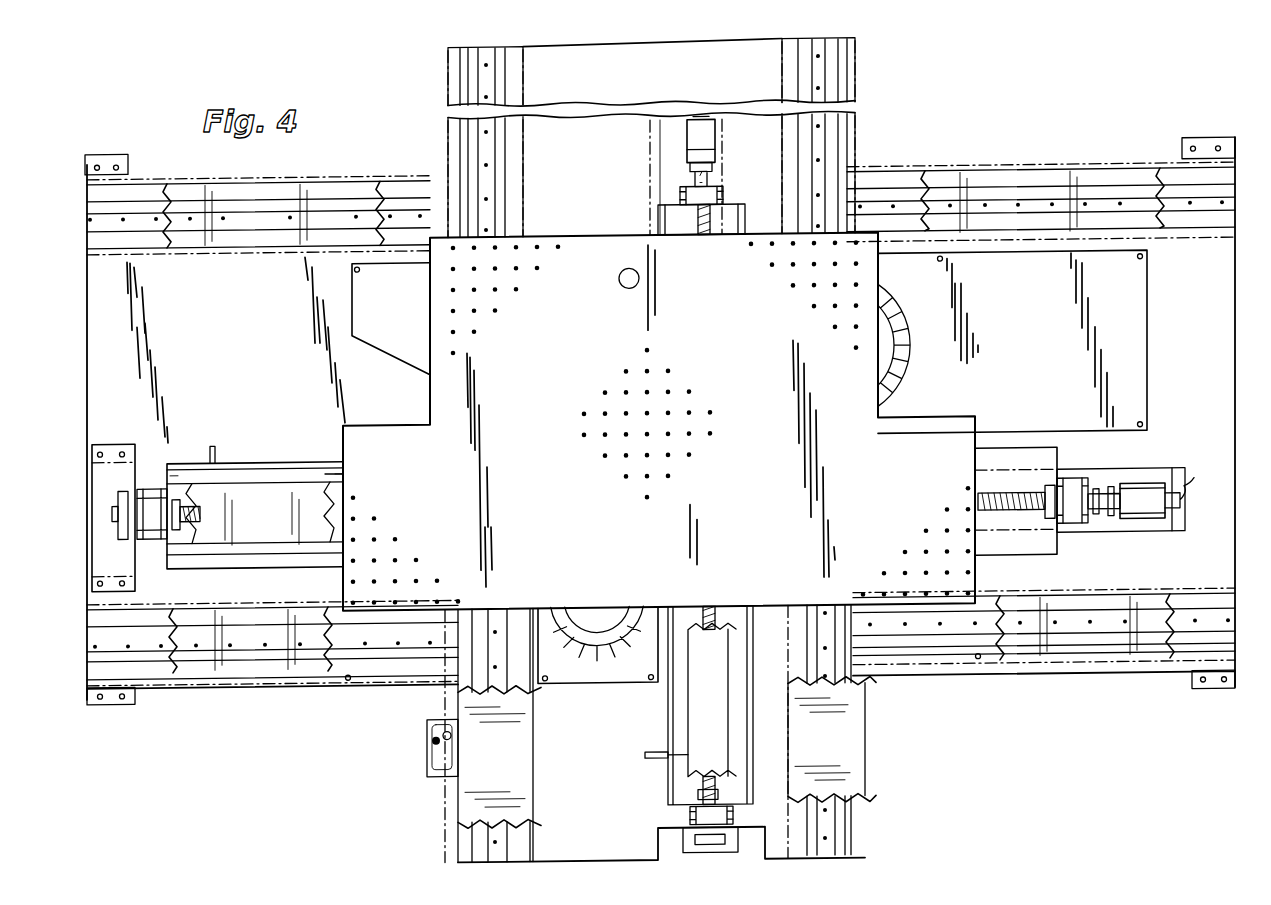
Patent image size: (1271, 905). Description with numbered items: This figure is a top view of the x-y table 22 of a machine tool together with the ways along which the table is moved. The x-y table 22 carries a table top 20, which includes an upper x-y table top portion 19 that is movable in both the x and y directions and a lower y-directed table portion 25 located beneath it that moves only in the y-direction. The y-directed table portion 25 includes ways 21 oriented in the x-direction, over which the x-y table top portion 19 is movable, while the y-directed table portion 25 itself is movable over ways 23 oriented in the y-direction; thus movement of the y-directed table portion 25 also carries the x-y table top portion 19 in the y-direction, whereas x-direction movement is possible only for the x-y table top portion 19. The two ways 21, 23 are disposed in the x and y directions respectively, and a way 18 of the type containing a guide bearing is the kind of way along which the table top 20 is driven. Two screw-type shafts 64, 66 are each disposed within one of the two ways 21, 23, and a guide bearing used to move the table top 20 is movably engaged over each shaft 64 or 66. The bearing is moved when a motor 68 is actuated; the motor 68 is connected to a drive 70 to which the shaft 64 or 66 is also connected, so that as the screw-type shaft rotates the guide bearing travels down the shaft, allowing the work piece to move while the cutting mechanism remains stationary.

The way 18 is at (258, 488).
The x-y table top portion 19 is at (933, 432).
The table top 20 is at (376, 432).
The ways 21 is at (958, 662).
The x-y table 22 is at (273, 697).
The ways 23 is at (683, 697).
The y-directed table portion 25 is at (850, 745).
The shaft 64 is at (345, 502).
The shaft 66 is at (718, 613).
The motor 68 is at (700, 128).
The drive 70 is at (680, 197).